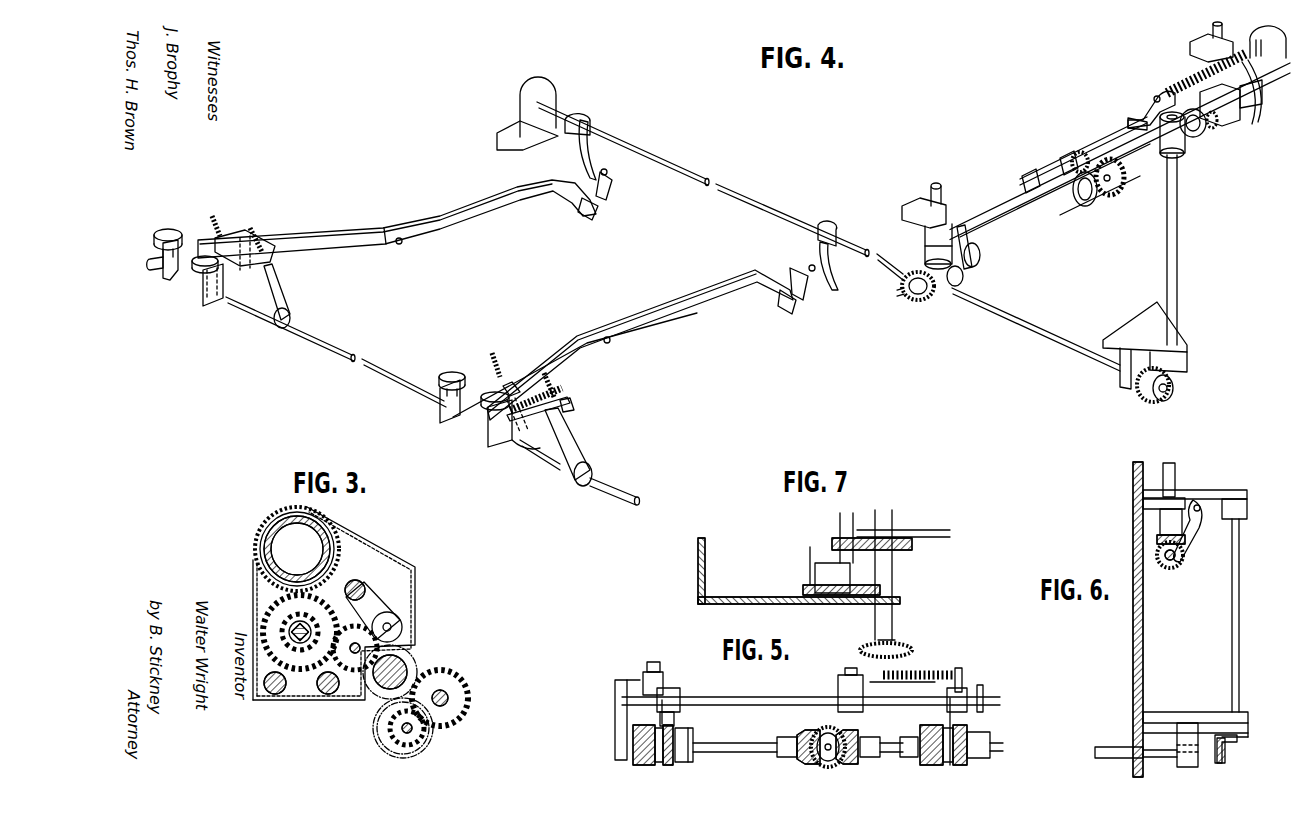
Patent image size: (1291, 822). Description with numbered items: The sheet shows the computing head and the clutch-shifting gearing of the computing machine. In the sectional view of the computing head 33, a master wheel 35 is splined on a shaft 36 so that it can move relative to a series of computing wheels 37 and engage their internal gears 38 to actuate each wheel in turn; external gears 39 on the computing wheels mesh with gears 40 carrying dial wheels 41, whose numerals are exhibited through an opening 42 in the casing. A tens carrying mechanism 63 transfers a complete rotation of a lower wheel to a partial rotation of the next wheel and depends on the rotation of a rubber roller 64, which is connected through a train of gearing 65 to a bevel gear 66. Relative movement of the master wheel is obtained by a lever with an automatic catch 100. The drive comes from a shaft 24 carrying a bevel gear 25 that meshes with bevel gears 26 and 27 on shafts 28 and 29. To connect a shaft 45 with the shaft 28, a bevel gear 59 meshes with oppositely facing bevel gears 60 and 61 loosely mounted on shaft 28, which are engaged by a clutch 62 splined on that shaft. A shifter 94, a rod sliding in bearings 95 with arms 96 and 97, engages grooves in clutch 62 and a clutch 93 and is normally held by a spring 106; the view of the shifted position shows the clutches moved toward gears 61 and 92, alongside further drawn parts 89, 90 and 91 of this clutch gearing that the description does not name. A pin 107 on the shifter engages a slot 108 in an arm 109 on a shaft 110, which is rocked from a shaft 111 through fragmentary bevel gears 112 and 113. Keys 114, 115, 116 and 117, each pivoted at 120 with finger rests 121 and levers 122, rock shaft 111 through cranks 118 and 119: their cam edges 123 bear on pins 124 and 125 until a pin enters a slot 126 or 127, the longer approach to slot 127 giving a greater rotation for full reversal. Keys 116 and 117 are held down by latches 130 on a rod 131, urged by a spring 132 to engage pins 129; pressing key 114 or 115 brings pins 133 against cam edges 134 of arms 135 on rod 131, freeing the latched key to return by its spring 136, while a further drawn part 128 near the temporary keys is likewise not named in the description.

In FIG. 4, the shaft 24 is at (1052, 158).
In FIG. 5, the shaft 24 is at (824, 730).
In FIG. 4, the bevel gear 25 is at (1082, 152).
In FIG. 5, the bevel gear 25 is at (828, 759).
In FIG. 4, the bevel gear 26 is at (1092, 205).
In FIG. 5, the bevel gear 26 is at (806, 762).
In FIG. 4, the bevel gear 27 is at (1116, 193).
In FIG. 5, the bevel gear 27 is at (852, 760).
In FIG. 5, the shaft 28 is at (737, 750).
In FIG. 5, the shaft 29 is at (887, 746).
In FIG. 3, the computing head 33 is at (390, 556).
In FIG. 7, the computing head 33 is at (799, 571).
In FIG. 3, the master wheel 35 is at (283, 624).
In FIG. 3, the shaft 36 is at (290, 636).
In FIG. 3, the computing wheels 37 is at (278, 648).
In FIG. 3, the internal gears 38 is at (355, 634).
In FIG. 3, the external gears 39 is at (275, 612).
In FIG. 3, the gears 40 is at (262, 535).
In FIG. 3, the dial wheels 41 is at (276, 549).
In FIG. 3, the opening 42 is at (265, 520).
In FIG. 4, the shaft 45 is at (940, 208).
In FIG. 5, the shaft 45 is at (652, 668).
In FIG. 6, the shaft 45 is at (1172, 458).
In FIG. 4, the bevel gear 59 is at (958, 280).
In FIG. 5, the bevel gear 59 is at (674, 724).
In FIG. 6, the bevel gear 59 is at (1156, 538).
In FIG. 4, the bevel gear 60 is at (926, 299).
In FIG. 5, the bevel gear 60 is at (640, 766).
In FIG. 4, the bevel gear 61 is at (962, 276).
In FIG. 5, the bevel gear 61 is at (690, 762).
In FIG. 6, the bevel gear 61 is at (1165, 568).
In FIG. 5, the clutch 62 is at (659, 764).
In FIG. 6, the clutch 62 is at (1180, 562).
In FIG. 3, the tens carrying mechanism 63 is at (357, 658).
In FIG. 3, the rubber roller 64 is at (404, 664).
In FIG. 7, the rubber roller 64 is at (834, 553).
In FIG. 3, the train of gearing 65 is at (446, 718).
In FIG. 7, the train of gearing 65 is at (870, 587).
In FIG. 7, the bevel gear 66 is at (895, 645).
In FIG. 4, the post 89 is at (1226, 30).
In FIG. 5, the post 89 is at (958, 668).
In FIG. 4, the bearing block 90 is at (1236, 126).
In FIG. 4, the gear 91 is at (1200, 136).
In FIG. 5, the gear 91 is at (930, 765).
In FIG. 4, the gear 92 is at (1250, 108).
In FIG. 5, the gear 92 is at (978, 736).
In FIG. 4, the clutch 93 is at (1214, 126).
In FIG. 5, the clutch 93 is at (950, 766).
In FIG. 4, the shifter 94 is at (992, 226).
In FIG. 5, the shifter 94 is at (766, 700).
In FIG. 6, the shifter 94 is at (1198, 512).
In FIG. 4, the bearings 95 is at (1268, 42).
In FIG. 5, the bearings 95 is at (614, 690).
In FIG. 4, the arm 96 is at (980, 256).
In FIG. 5, the arm 96 is at (669, 765).
In FIG. 6, the arm 96 is at (1195, 538).
In FIG. 4, the arm 97 is at (1256, 126).
In FIG. 5, the arm 97 is at (962, 765).
In FIG. 6, the automatic catch 100 is at (1232, 624).
In FIG. 4, the spring 106 is at (1190, 84).
In FIG. 5, the spring 106 is at (938, 672).
In FIG. 4, the pin 107 is at (1150, 92).
In FIG. 4, the slot 108 is at (1132, 118).
In FIG. 4, the arm 109 is at (1160, 140).
In FIG. 5, the arm 109 is at (840, 692).
In FIG. 6, the arm 109 is at (1208, 498).
In FIG. 4, the shaft 110 is at (1180, 264).
In FIG. 5, the shaft 110 is at (855, 712).
In FIG. 4, the shaft 111 is at (1050, 340).
In FIG. 6, the shaft 111 is at (1114, 759).
In FIG. 4, the fragmentary bevel gear 112 is at (1168, 372).
In FIG. 6, the fragmentary bevel gear 112 is at (1228, 740).
In FIG. 4, the fragmentary bevel gear 113 is at (1140, 398).
In FIG. 6, the fragmentary bevel gear 113 is at (1221, 763).
In FIG. 4, the key 114 is at (166, 272).
In FIG. 4, the key 115 is at (206, 296).
In FIG. 4, the key 116 is at (448, 418).
In FIG. 4, the key 117 is at (496, 444).
In FIG. 4, the crank 118 is at (580, 138).
In FIG. 4, the crank 119 is at (840, 250).
In FIG. 4, the pivot 120 is at (402, 244).
In FIG. 4, the finger rests 121 is at (175, 236).
In FIG. 4, the levers 122 is at (453, 222).
In FIG. 4, the cam edges 123 is at (610, 185).
In FIG. 4, the pin 124 is at (604, 169).
In FIG. 4, the pin 125 is at (810, 265).
In FIG. 4, the slot 126 is at (590, 214).
In FIG. 4, the slot 127 is at (583, 165).
In FIG. 4, the screw 128 is at (212, 214).
In FIG. 4, the pins 129 is at (510, 384).
In FIG. 4, the latches 130 is at (566, 430).
In FIG. 4, the rod 131 is at (622, 490).
In FIG. 4, the spring 132 is at (528, 392).
In FIG. 4, the pins 133 is at (228, 244).
In FIG. 4, the cam edges 134 is at (270, 280).
In FIG. 4, the arms 135 is at (226, 310).
In FIG. 4, the spring 136 is at (494, 351).